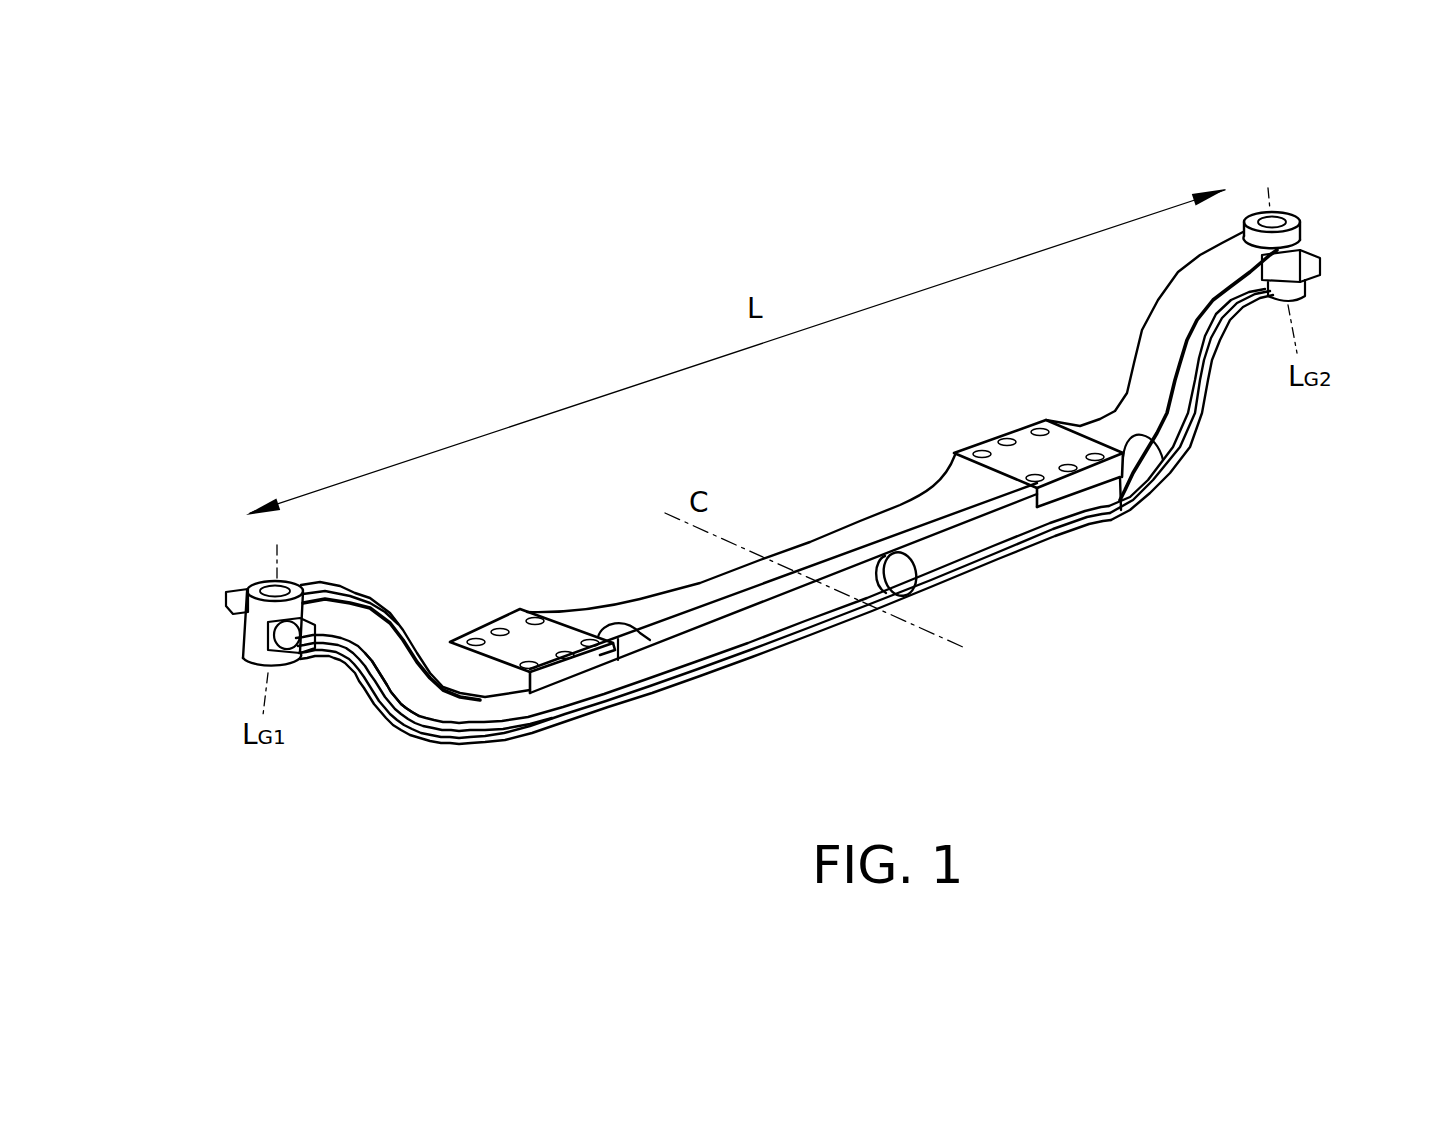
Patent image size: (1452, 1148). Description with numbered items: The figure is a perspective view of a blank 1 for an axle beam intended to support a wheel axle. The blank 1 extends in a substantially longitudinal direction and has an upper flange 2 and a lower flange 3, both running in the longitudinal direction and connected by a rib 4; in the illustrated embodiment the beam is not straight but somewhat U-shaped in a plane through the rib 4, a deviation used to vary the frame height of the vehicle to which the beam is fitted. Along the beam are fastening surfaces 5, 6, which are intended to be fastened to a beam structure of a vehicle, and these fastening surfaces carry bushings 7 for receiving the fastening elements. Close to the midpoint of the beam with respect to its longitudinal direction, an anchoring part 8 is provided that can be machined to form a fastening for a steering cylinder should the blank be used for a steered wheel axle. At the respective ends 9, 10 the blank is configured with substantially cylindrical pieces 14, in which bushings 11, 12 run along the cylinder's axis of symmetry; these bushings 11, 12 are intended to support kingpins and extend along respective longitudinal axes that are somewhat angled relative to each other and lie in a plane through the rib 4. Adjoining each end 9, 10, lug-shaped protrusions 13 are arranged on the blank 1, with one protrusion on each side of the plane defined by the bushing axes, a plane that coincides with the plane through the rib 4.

The blank for an axle beam 1 is at (838, 668).
The upper flange 2 is at (410, 610).
The lower flange 3 is at (468, 752).
The rib 4 is at (427, 700).
The fastening surface 5 is at (493, 657).
The fastening surface 6 is at (1150, 436).
The bushings 7 is at (606, 622).
The anchoring part 8 is at (900, 563).
The end 9 is at (255, 617).
The end 10 is at (1297, 238).
The bushing 11 is at (255, 582).
The bushing 12 is at (1262, 212).
The lug-shaped protrusions 13 is at (1323, 262).
The cylindrical pieces 14 is at (302, 580).